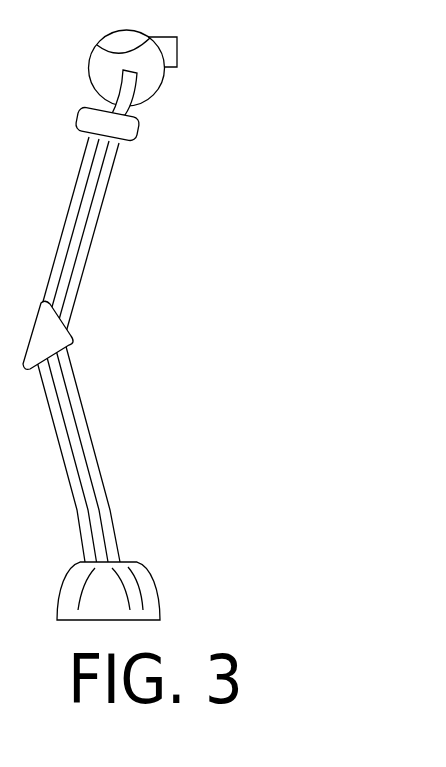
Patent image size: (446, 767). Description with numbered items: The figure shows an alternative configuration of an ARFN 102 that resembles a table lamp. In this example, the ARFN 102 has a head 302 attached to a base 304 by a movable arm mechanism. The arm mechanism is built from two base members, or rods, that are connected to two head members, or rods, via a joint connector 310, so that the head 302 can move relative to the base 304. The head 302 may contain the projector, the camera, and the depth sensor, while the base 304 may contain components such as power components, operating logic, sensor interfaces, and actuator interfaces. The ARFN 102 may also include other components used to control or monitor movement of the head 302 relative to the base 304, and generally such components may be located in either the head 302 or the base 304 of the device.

The ARFN 102 is at (203, 328).
The head 302 is at (160, 97).
The base 304 is at (166, 595).
The joint connector 310 is at (55, 343).